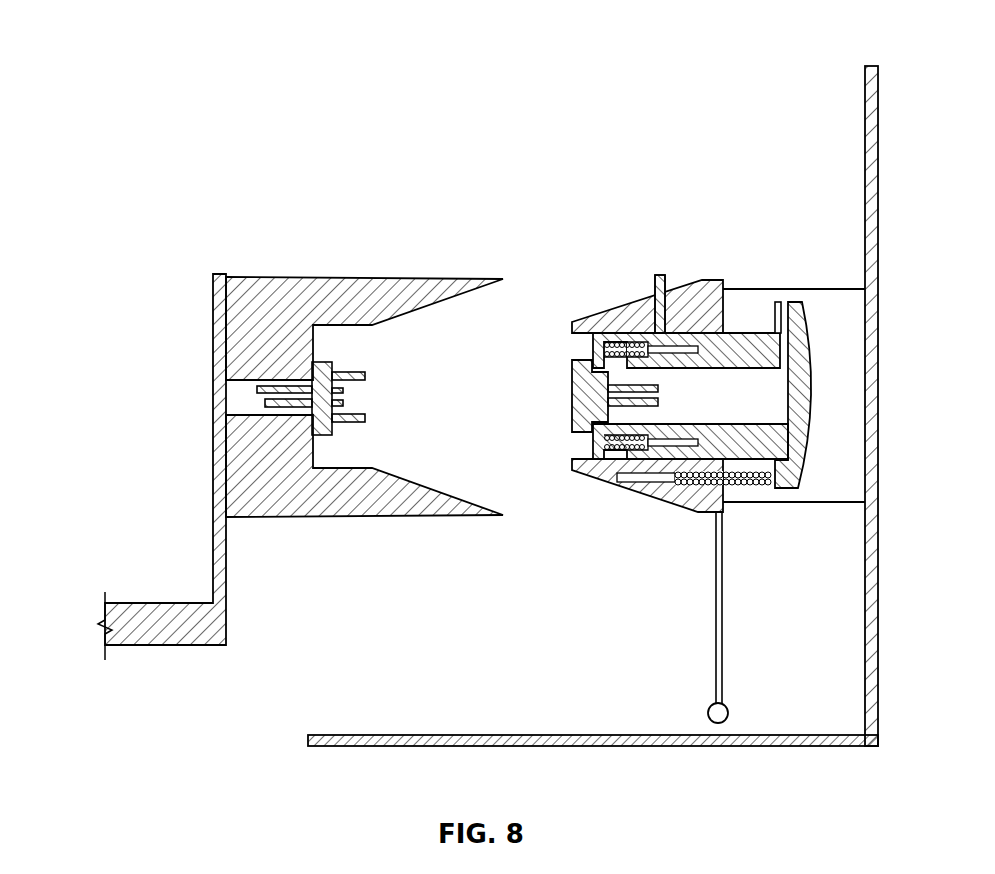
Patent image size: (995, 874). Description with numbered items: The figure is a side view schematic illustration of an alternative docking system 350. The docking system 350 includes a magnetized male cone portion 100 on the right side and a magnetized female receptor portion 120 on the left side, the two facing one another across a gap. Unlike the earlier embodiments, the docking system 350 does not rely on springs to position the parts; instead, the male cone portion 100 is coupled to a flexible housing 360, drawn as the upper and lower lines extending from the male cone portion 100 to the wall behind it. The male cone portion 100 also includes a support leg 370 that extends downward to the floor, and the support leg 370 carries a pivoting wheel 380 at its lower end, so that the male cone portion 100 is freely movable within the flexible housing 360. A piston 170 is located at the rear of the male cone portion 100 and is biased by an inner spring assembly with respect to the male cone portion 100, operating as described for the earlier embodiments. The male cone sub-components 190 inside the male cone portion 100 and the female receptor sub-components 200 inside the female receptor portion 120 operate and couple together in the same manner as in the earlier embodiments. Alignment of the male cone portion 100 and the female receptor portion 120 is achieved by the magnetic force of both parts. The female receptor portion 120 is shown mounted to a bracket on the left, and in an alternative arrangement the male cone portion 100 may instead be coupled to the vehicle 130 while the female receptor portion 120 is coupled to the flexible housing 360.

The docking system 350 is at (156, 72).
The vehicle 130 is at (128, 603).
The female receptor portion 120 is at (365, 277).
The female receptor sub-components 200 is at (337, 392).
The male cone portion 100 is at (716, 279).
The male cone sub-components 190 is at (572, 397).
The piston 170 is at (810, 340).
The flexible housing 360 is at (789, 289).
The support leg 370 is at (722, 632).
The pivoting wheel 380 is at (728, 713).